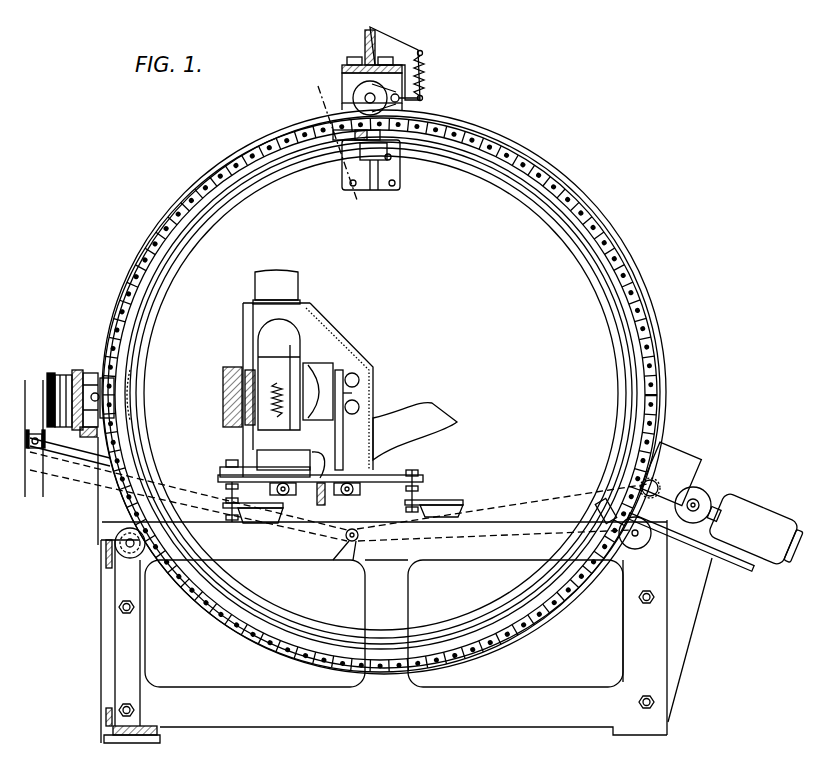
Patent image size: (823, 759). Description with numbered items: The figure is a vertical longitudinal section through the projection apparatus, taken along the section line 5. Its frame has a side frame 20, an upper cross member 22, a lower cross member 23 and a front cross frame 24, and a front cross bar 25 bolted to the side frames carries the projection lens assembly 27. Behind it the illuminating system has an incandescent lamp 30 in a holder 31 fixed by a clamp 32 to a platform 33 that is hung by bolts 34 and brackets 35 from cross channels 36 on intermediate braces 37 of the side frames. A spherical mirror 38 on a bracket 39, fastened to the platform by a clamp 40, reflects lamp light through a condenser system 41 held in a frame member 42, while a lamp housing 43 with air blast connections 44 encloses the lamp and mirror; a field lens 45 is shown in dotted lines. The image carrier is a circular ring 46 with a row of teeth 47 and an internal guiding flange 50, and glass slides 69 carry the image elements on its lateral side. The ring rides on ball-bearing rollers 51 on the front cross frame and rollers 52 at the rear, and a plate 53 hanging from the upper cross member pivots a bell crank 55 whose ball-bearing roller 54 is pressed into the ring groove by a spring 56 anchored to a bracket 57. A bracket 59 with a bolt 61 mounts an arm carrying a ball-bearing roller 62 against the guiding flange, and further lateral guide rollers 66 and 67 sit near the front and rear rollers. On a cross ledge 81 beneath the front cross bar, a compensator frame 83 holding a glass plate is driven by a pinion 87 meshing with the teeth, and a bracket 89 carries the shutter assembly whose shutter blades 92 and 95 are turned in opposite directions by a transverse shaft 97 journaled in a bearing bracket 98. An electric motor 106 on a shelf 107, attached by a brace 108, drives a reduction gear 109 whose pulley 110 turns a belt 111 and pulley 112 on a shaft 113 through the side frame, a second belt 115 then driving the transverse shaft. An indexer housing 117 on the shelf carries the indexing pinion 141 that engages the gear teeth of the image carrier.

The section line 5 is at (318, 90).
The side frame 20 is at (185, 190).
The upper cross member 22 is at (365, 48).
The lower cross member 23 is at (668, 728).
The front cross frame 24 is at (113, 728).
The front cross bar 25 is at (82, 370).
The projection lens assembly 27 is at (58, 373).
The incandescent lamp 30 is at (300, 325).
The holder 31 is at (262, 455).
The clamp 32 is at (236, 465).
The platform 33 is at (378, 484).
The bolts 34 is at (418, 486).
The brackets 35 is at (450, 503).
The cross channels 36 is at (238, 516).
The intermediate braces 37 is at (492, 550).
The spherical mirror 38 is at (314, 363).
The bracket 39 is at (340, 425).
The clamp 40 is at (340, 495).
The condenser system 41 is at (236, 368).
The frame member 42 is at (243, 322).
The lamp housing 43 is at (345, 335).
The air blast connections 44 is at (286, 278).
The field lens 45 is at (134, 384).
The circular ring 46 is at (636, 262).
The row of teeth 47 is at (660, 348).
The internal guiding flange 50 is at (548, 182).
The ball-bearing rollers 51 is at (108, 560).
The rollers 52 is at (628, 545).
The plate 53 is at (345, 73).
The ball-bearing roller 54 is at (350, 90).
The bell crank 55 is at (422, 99).
The spring 56 is at (424, 62).
The bracket 57 is at (400, 45).
The bracket 59 is at (400, 175).
The bolt 61 is at (358, 192).
The ball-bearing roller 62 is at (340, 142).
The lateral guide roller 66 is at (118, 530).
The guide roller 67 is at (610, 490).
The glass slides 69 is at (440, 640).
The cross ledge 81 is at (100, 458).
The frame 83 is at (106, 378).
The pinion 87 is at (128, 362).
The bracket 89 is at (60, 452).
The shutter blade 92 is at (45, 497).
The shutter blade 95 is at (25, 380).
The transverse shaft 97 is at (27, 448).
The bearing bracket 98 is at (88, 466).
The electric motor 106 is at (772, 488).
The shelf 107 is at (735, 560).
The brace 108 is at (692, 618).
The reduction gear 109 is at (698, 486).
The pulley 110 is at (712, 492).
The belt 111 is at (551, 506).
The pulley 112 is at (348, 542).
The shaft 113 is at (352, 545).
The belt 115 is at (170, 482).
The indexer housing 117 is at (658, 484).
The pinion 141 is at (670, 462).